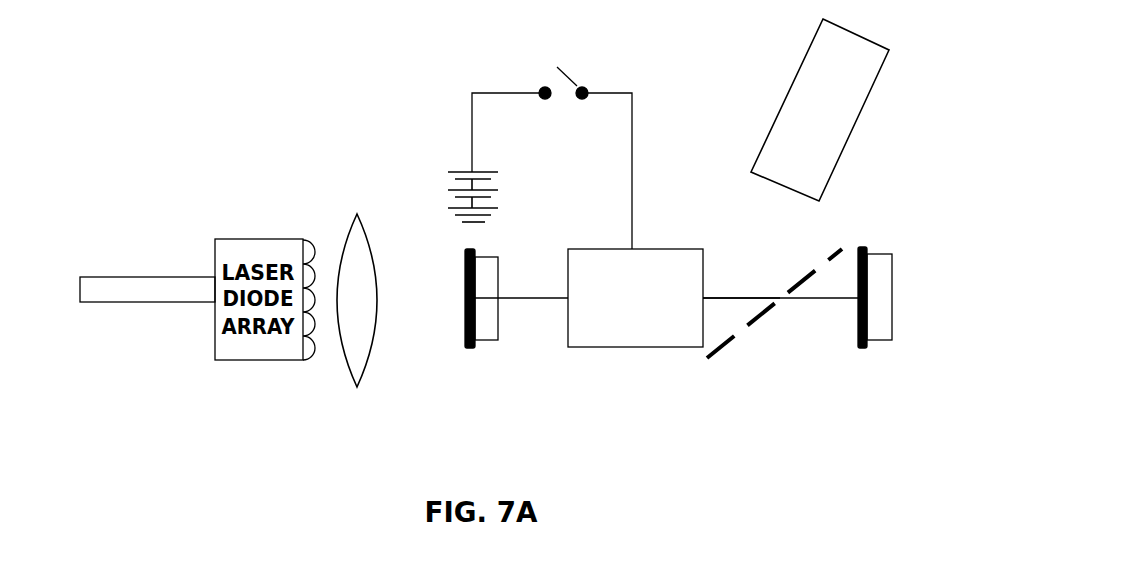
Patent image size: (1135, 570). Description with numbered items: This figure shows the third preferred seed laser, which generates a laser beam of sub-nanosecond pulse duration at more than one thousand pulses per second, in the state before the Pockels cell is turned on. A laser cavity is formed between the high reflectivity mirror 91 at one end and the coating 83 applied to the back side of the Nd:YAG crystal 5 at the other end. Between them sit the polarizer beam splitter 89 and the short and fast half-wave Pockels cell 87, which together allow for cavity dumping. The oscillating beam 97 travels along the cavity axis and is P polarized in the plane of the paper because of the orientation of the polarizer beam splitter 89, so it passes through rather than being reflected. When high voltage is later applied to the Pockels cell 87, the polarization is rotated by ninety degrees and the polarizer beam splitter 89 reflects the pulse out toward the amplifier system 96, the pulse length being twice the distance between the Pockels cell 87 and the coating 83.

The Nd:YAG crystal 5 is at (499, 351).
The coating 83 is at (473, 350).
The Pockels cell 87 is at (624, 352).
The polarizer beam splitter 89 is at (743, 332).
The high reflectivity mirror 91 is at (881, 287).
The amplifier system 96 is at (760, 86).
The oscillating beam 97 is at (730, 293).